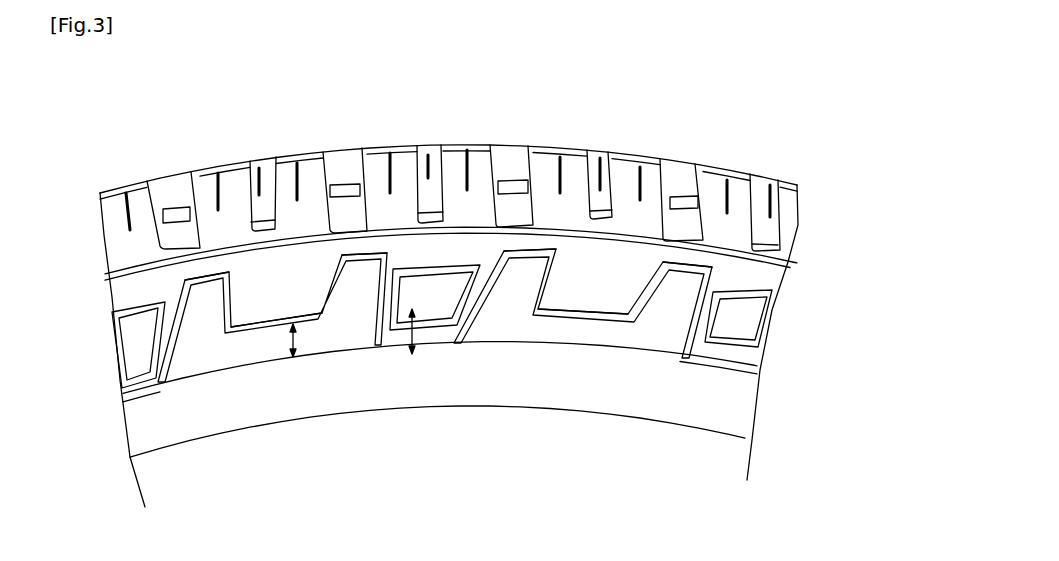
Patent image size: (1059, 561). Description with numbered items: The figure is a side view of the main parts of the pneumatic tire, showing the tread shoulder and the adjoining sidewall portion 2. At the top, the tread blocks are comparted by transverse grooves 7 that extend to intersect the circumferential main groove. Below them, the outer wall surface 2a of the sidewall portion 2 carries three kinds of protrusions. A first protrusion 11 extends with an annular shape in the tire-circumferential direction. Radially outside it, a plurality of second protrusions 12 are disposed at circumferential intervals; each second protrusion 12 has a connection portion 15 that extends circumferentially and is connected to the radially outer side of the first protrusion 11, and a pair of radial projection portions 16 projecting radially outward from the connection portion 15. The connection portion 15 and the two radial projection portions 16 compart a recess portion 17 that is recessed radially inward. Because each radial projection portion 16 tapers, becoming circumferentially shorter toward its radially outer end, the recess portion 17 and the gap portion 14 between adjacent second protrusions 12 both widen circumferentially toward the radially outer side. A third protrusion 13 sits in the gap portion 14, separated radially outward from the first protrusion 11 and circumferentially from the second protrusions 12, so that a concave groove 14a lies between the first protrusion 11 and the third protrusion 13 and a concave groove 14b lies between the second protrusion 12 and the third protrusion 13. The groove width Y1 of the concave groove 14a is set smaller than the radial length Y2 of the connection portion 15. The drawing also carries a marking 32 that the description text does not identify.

The sidewall portion 2 is at (134, 498).
The outer wall surface 2a is at (130, 290).
The transverse grooves 7 is at (162, 185).
The first protrusion 11 is at (160, 417).
The second protrusion 12 is at (250, 350).
The third protrusion 13 is at (123, 342).
The gap portion 14 is at (430, 280).
The concave groove 14a is at (455, 345).
The concave groove 14b is at (385, 285).
The connection portion 15 is at (580, 337).
The radial projection portion 16 is at (518, 290).
The recess portion 17 is at (262, 298).
The sipe 32 is at (214, 175).
The groove width Y1 is at (412, 356).
The length of the connection portion Y2 is at (297, 340).